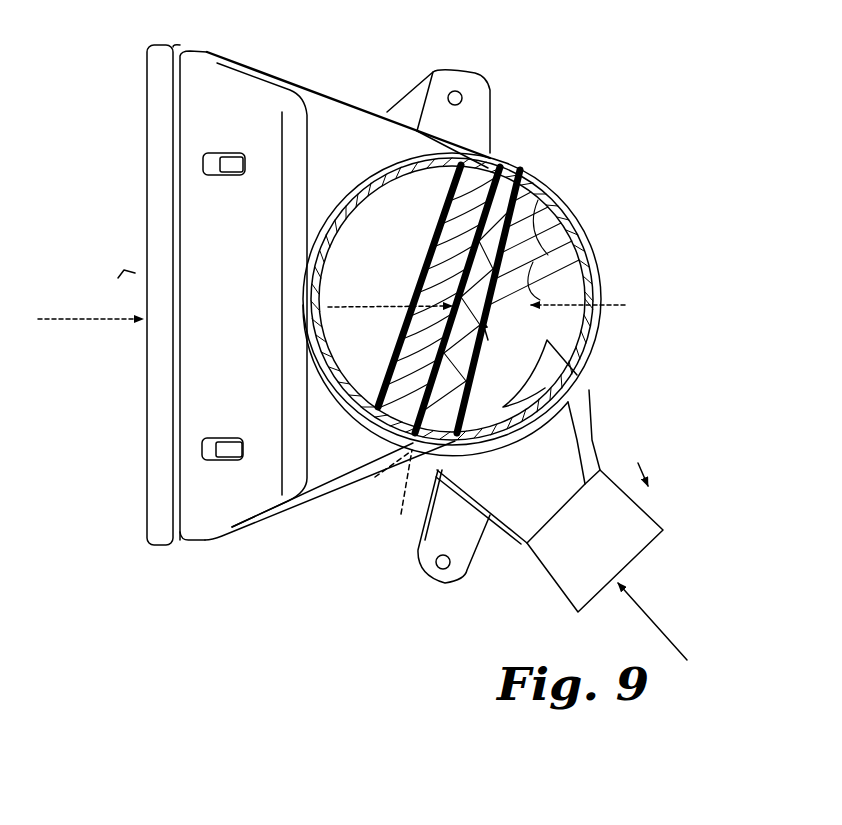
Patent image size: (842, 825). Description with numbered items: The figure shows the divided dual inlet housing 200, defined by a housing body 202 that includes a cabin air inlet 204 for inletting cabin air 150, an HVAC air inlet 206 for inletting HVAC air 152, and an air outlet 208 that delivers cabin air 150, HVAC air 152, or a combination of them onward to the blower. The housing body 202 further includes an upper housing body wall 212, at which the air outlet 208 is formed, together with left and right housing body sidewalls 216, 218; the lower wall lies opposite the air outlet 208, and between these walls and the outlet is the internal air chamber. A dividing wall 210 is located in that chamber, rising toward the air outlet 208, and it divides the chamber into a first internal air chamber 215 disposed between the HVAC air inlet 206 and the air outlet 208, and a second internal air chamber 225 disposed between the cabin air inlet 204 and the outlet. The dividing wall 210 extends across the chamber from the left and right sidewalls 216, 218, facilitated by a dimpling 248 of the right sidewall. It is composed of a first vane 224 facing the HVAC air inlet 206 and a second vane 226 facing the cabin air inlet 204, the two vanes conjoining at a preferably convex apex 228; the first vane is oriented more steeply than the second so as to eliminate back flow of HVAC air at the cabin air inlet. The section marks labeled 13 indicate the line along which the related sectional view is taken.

The divided dual inlet housing 200 is at (634, 241).
The housing body 202 is at (563, 176).
The cabin air inlet 204 is at (147, 173).
The HVAC air inlet 206 is at (650, 548).
The air outlet 208 is at (560, 196).
The dividing wall 210 is at (596, 308).
The upper housing body wall 212 is at (337, 152).
The first internal air chamber 215 is at (563, 268).
The left housing body sidewall 216 is at (310, 87).
The right housing body sidewall 218 is at (380, 478).
The first vane 224 is at (525, 183).
The second internal air chamber 225 is at (381, 250).
The second vane 226 is at (466, 168).
The apex 228 is at (503, 172).
The dimpling 248 is at (396, 498).
The cabin air 150 is at (85, 320).
The HVAC air 152 is at (515, 395).
The section view indicator 13 is at (383, 383).